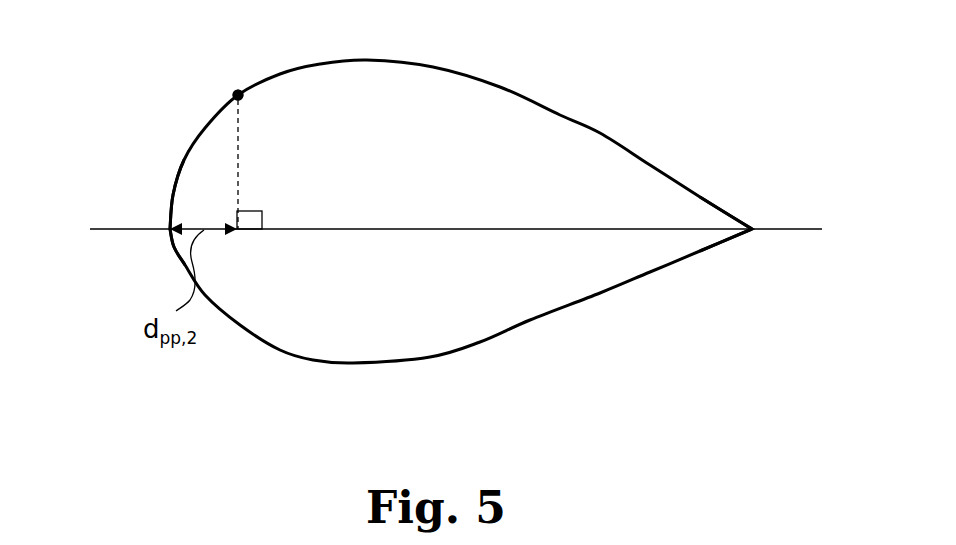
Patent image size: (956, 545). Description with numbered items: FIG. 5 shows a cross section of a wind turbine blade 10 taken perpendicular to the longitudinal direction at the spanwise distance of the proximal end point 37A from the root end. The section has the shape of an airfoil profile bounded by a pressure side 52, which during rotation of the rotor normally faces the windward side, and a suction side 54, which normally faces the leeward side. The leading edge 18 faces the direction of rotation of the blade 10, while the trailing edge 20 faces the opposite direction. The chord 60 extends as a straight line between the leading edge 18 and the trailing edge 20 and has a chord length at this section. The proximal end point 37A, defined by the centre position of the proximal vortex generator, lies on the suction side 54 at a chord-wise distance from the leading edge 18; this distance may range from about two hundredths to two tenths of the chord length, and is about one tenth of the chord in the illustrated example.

The wind turbine blade 10 is at (451, 209).
The leading edge 18 is at (170, 229).
The trailing edge 20 is at (752, 224).
The proximal end point 37A is at (236, 93).
The pressure side 52 is at (480, 345).
The suction side 54 is at (511, 93).
The chord 60 is at (622, 229).